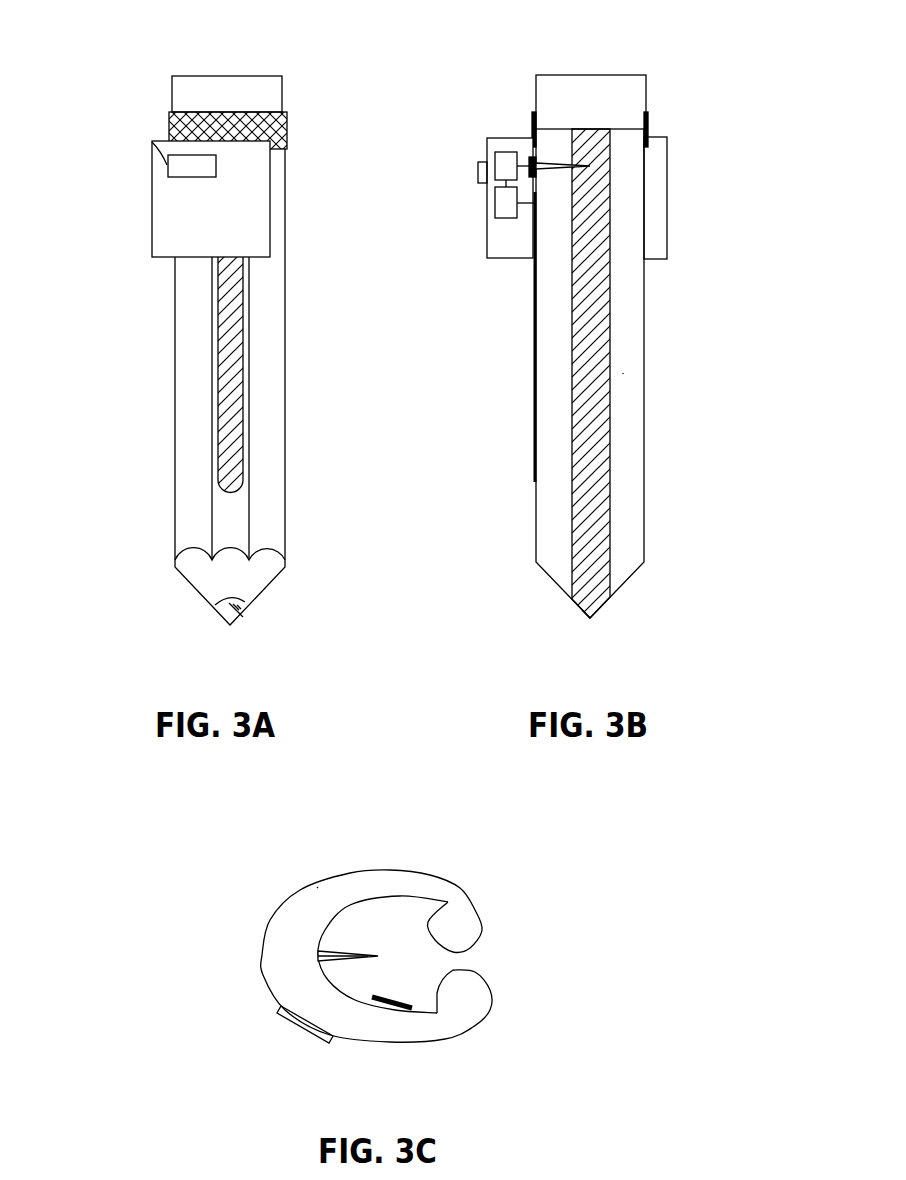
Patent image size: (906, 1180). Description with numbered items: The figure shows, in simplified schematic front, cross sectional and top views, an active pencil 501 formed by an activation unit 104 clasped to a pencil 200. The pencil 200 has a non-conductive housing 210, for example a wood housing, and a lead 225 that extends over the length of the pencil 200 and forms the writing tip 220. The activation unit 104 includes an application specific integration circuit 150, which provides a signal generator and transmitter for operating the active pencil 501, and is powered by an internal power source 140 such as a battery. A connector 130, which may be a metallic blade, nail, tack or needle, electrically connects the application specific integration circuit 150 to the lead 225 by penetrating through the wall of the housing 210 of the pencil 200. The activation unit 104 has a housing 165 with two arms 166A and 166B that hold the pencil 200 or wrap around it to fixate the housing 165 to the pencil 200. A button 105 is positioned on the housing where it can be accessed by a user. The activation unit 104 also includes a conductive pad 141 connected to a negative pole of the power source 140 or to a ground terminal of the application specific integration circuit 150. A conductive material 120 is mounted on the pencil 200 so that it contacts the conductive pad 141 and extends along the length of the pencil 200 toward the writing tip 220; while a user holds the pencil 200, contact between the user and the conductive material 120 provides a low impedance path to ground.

In FIG. 3A, the activation unit 104 is at (152, 245).
In FIG. 3B, the activation unit 104 is at (487, 243).
In FIG. 3C, the activation unit 104 is at (225, 930).
In FIG. 3A, the button 105 is at (152, 142).
In FIG. 3B, the button 105 is at (478, 170).
In FIG. 3C, the button 105 is at (293, 1023).
In FIG. 3A, the conductive material 120 is at (217, 473).
In FIG. 3B, the conductive material 120 is at (535, 348).
In FIG. 3B, the connector 130 is at (562, 158).
In FIG. 3C, the connector 130 is at (350, 952).
In FIG. 3B, the power source 140 is at (495, 204).
In FIG. 3B, the conductive pad 141 is at (533, 210).
In FIG. 3C, the conductive pad 141 is at (390, 1008).
In FIG. 3B, the application specific integration circuit 150 is at (512, 152).
In FIG. 3A, the housing 165 is at (152, 198).
In FIG. 3C, the housing 165 is at (317, 887).
In FIG. 3C, the arm 166A is at (470, 885).
In FIG. 3C, the arm 166B is at (468, 1032).
In FIG. 3A, the pencil 200 is at (262, 365).
In FIG. 3B, the pencil 200 is at (623, 373).
In FIG. 3A, the housing 210 is at (175, 385).
In FIG. 3B, the housing 210 is at (645, 312).
In FIG. 3A, the writing tip 220 is at (230, 612).
In FIG. 3B, the writing tip 220 is at (590, 605).
In FIG. 3B, the lead 225 is at (608, 410).
In FIG. 3A, the active pencil 501 is at (110, 313).
In FIG. 3B, the active pencil 501 is at (760, 202).